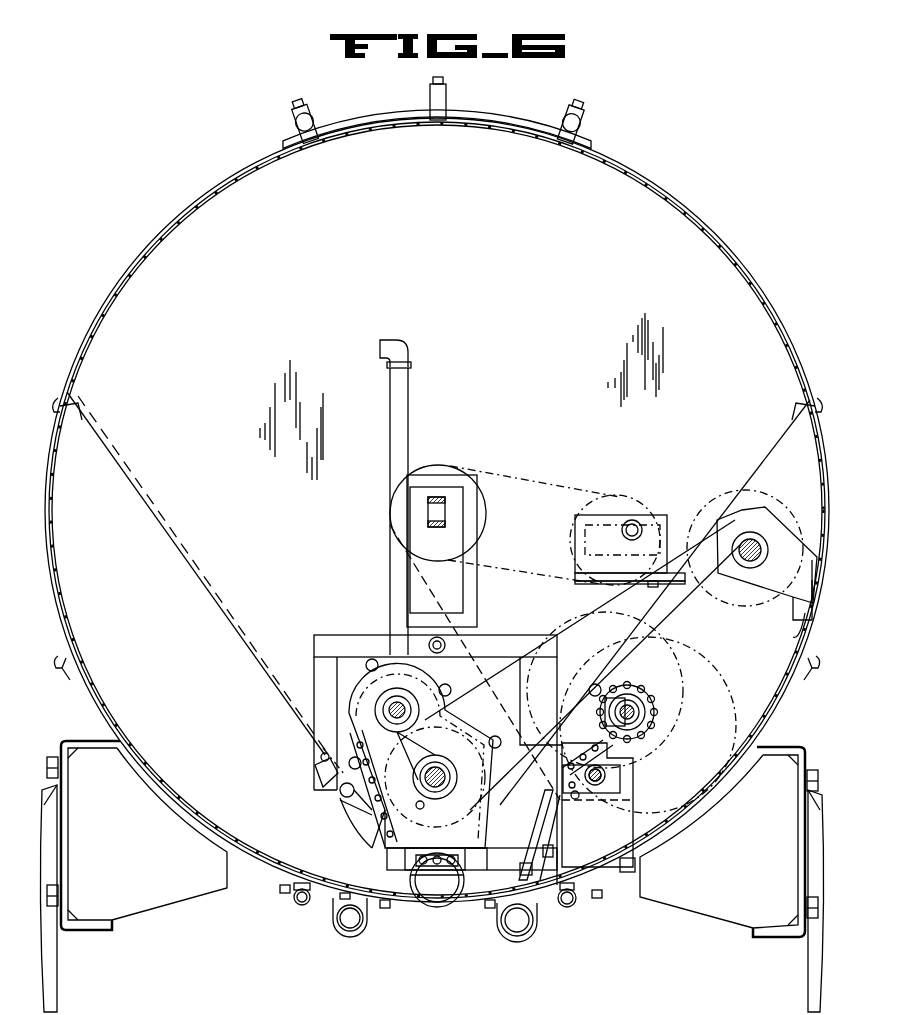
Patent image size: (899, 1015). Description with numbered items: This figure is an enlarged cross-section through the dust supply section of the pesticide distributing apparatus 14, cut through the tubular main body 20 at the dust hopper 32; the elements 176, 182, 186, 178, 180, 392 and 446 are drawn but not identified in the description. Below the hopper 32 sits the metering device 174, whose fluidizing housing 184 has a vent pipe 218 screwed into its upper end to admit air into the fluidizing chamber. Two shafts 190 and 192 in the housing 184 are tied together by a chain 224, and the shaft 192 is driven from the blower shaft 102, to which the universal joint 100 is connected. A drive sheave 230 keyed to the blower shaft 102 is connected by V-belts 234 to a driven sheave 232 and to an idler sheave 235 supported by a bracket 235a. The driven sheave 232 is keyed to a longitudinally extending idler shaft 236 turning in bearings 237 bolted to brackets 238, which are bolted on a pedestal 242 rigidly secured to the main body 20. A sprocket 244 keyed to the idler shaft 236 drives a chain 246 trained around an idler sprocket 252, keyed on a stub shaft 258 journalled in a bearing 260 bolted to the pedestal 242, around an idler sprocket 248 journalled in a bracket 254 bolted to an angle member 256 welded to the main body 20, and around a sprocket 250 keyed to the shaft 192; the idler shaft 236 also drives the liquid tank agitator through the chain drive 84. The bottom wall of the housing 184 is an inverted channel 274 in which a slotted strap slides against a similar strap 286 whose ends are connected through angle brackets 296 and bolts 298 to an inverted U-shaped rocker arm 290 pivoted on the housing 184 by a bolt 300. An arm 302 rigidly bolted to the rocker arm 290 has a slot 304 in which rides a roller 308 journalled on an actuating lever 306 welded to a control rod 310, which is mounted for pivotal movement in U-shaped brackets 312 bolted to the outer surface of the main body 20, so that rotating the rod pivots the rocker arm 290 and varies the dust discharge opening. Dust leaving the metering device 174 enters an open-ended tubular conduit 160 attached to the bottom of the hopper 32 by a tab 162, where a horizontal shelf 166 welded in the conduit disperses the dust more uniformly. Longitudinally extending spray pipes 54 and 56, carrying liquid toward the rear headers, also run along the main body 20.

The pesticide distributing apparatus 14 is at (152, 192).
The main body 20 is at (664, 188).
The dust hopper 32 is at (453, 231).
The track ring 176 is at (204, 205).
The top fitting 182 is at (455, 118).
The tank chamber 186 is at (301, 529).
The diagonal brace 178 is at (236, 592).
The vent pipe 218 is at (395, 455).
The universal joint 100 is at (432, 500).
The blower shaft 102 is at (430, 518).
The drive sheave 230 is at (490, 503).
The V-belts 234 is at (500, 468).
The idler sheave 235 is at (578, 530).
The bracket 235a is at (575, 570).
The rocker arm 290 is at (543, 633).
The bolt 300 is at (442, 645).
The drive belt 180 is at (785, 440).
The idler sprocket 248 is at (693, 497).
The bracket 254 is at (728, 520).
The angle member 256 is at (798, 612).
The chain 246 is at (730, 658).
The driven sheave 232 is at (633, 625).
The brackets 238 is at (572, 692).
The idler shaft 236 is at (640, 700).
The sprocket 244 is at (640, 705).
The chain drive 84 is at (362, 834).
The bearings 237 is at (600, 748).
The bearing 260 is at (607, 777).
The idler sprocket 252 is at (640, 800).
The stub shaft 258 is at (575, 800).
The arm 302 is at (545, 835).
The slot 304 is at (548, 862).
The roller 308 is at (540, 866).
The actuating lever 306 is at (522, 880).
The metering device 174 is at (365, 722).
The shaft 190 is at (420, 684).
The shaft 192 is at (428, 783).
The sprocket 250 is at (472, 822).
The fluidizing housing 184 is at (355, 730).
The chain 224 is at (322, 749).
The bolts 298 is at (318, 771).
The angle brackets 296 is at (328, 784).
The strap 286 is at (357, 820).
The inverted channel 274 is at (400, 830).
The tab 162 is at (400, 866).
The shelf 166 is at (460, 890).
The tubular conduit 160 is at (410, 897).
The pipe 56 is at (302, 906).
The roller hanger 392 is at (338, 925).
The control rod 310 is at (535, 932).
The U-shaped brackets 312 is at (528, 945).
The pipe 54 is at (562, 908).
The pedestal 242 is at (628, 874).
The side support 446 is at (166, 856).